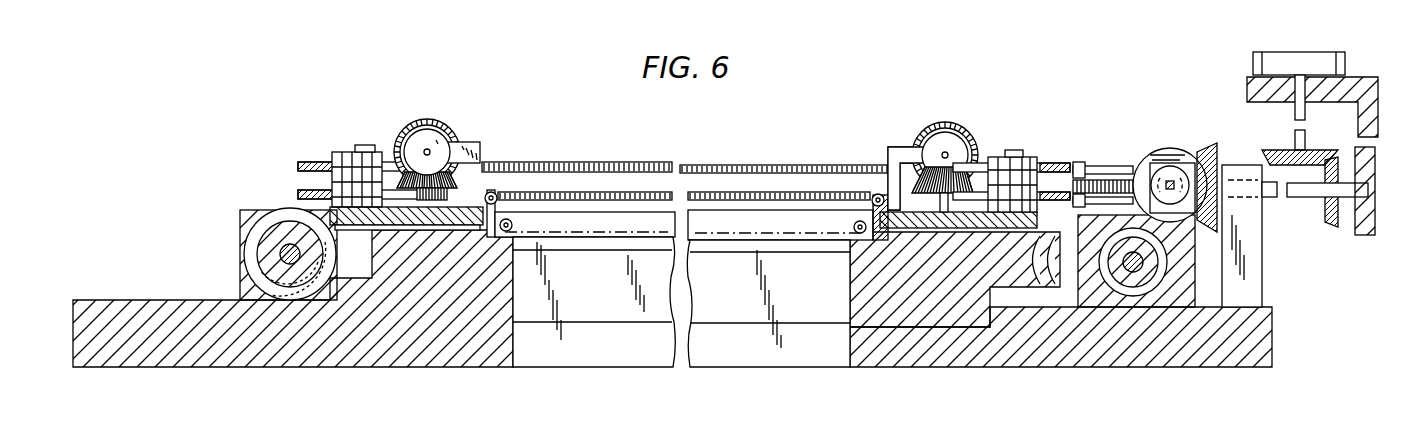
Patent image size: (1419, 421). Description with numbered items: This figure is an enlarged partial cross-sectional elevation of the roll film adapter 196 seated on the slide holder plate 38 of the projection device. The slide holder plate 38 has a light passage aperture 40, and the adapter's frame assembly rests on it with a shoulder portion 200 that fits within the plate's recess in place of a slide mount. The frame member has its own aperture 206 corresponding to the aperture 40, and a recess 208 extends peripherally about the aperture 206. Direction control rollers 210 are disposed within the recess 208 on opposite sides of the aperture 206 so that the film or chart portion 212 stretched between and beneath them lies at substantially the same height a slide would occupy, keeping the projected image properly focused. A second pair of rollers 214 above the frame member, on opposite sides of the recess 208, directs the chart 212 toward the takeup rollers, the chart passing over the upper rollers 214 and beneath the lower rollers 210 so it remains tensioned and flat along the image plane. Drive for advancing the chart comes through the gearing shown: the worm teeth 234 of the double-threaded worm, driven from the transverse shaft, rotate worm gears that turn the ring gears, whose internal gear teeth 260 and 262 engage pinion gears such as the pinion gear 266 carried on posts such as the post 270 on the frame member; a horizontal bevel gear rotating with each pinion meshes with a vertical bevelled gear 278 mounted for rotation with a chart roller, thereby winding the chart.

The slide holder plate 38 is at (927, 300).
The aperture 40 is at (852, 311).
The roll film adapter 196 is at (321, 136).
The shoulder portion 200 is at (870, 248).
The aperture 206 is at (513, 242).
The recess 208 is at (850, 240).
The direction control rollers 210 is at (513, 225).
The film or chart portion 212 is at (483, 162).
The second pair of rollers 214 is at (497, 194).
The worm teeth 234 is at (396, 138).
The internal gear teeth 260 is at (742, 153).
The internal gear teeth 262 is at (785, 192).
The pinion gear 266 is at (430, 208).
The post 270 is at (417, 208).
The bevelled gear 278 is at (452, 104).